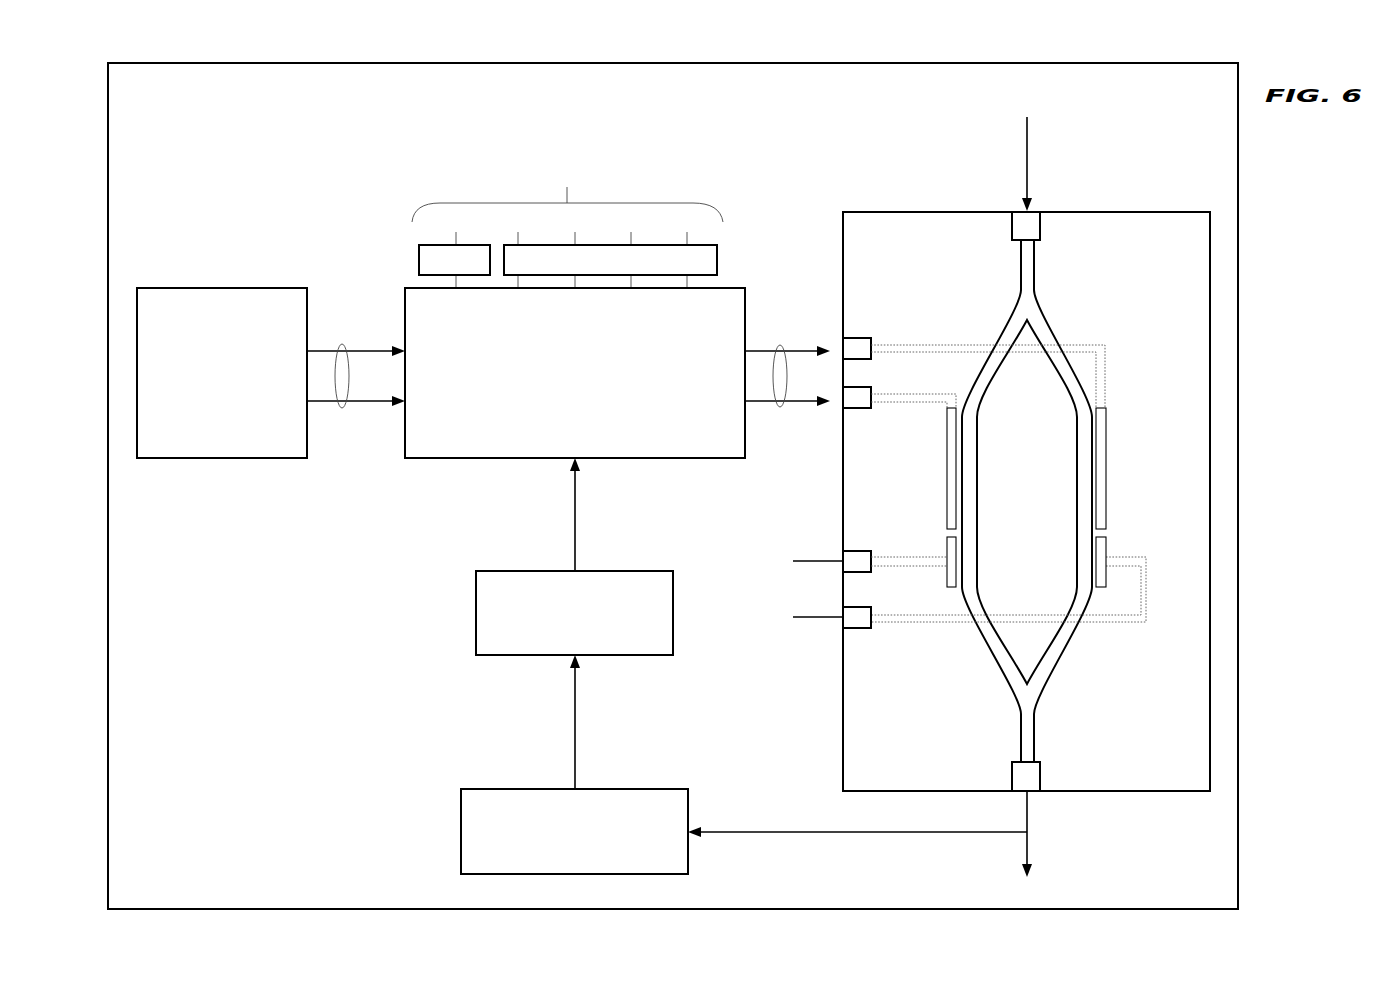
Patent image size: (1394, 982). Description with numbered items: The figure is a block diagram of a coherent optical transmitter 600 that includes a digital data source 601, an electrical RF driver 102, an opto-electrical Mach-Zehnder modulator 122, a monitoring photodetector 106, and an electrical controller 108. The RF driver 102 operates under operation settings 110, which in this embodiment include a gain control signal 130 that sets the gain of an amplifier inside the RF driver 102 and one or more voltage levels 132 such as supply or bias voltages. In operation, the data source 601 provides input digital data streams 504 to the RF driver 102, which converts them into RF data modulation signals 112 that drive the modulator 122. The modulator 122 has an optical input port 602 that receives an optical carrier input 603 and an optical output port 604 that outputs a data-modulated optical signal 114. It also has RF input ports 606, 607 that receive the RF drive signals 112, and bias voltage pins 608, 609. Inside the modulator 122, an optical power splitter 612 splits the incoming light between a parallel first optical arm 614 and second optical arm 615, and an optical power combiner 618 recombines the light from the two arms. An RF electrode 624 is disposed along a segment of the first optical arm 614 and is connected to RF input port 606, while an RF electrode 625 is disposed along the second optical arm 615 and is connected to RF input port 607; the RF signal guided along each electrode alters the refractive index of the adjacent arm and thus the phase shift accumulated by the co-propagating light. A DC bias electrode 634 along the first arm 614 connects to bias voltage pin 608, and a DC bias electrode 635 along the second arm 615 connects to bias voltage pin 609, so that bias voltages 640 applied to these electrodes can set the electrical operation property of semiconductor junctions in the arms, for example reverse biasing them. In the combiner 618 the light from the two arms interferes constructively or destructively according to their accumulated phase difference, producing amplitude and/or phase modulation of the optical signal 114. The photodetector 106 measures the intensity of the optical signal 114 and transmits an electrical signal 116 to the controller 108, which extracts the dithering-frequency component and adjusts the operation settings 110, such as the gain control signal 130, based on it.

The optical transmitter 600 is at (688, 116).
The operation settings 110 is at (658, 182).
The gain control signal 130 is at (419, 262).
The voltage levels 132 is at (717, 262).
The digital data source 601 is at (238, 396).
The input digital data streams 504 is at (342, 408).
The electrical RF driver 102 is at (591, 396).
The RF data modulation signals 112 is at (780, 407).
The electrical controller 108 is at (591, 634).
The electrical signal 116 is at (575, 730).
The photodetector 106 is at (591, 852).
The Mach-Zehnder modulator 122 is at (885, 264).
The optical input 603 is at (1055, 162).
The optical input port 602 is at (1040, 225).
The optical power splitter 612 is at (1000, 297).
The first optical arm 614 is at (992, 481).
The second optical arm 615 is at (1062, 499).
The optical power combiner 618 is at (990, 695).
The optical output port 604 is at (1041, 778).
The data-modulated optical signal 114 is at (1060, 853).
The RF input port 606 is at (871, 342).
The RF input port 607 is at (871, 408).
The bias voltage pin 608 is at (871, 553).
The bias voltage pin 609 is at (871, 628).
The RF electrode 624 is at (947, 480).
The RF electrode 625 is at (1106, 468).
The DC bias electrode 634 is at (947, 580).
The DC bias electrode 635 is at (1106, 538).
The bias voltages 640 is at (789, 643).